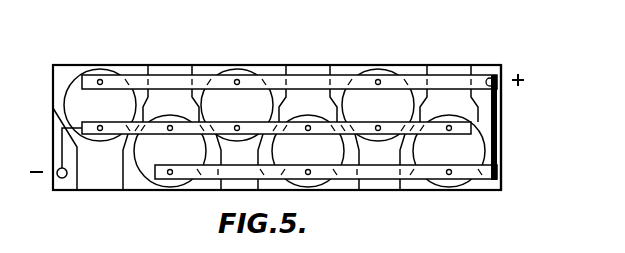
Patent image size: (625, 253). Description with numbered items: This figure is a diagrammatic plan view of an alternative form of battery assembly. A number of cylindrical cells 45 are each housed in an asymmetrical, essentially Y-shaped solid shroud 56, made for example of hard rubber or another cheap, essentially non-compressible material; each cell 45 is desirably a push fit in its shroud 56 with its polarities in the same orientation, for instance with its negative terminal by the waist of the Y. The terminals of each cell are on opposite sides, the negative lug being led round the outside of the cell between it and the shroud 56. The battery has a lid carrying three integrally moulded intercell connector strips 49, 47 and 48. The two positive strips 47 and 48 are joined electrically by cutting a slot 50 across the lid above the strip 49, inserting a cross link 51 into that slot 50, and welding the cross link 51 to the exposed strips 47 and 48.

The cylindrical cell 45 is at (77, 78).
The positive intercell connector strip 47 is at (376, 173).
The positive intercell connector strip 48 is at (305, 80).
The intercell connector strip 49 is at (140, 134).
The slot 50 is at (502, 118).
The cross link 51 is at (495, 138).
The shroud 56 is at (98, 168).